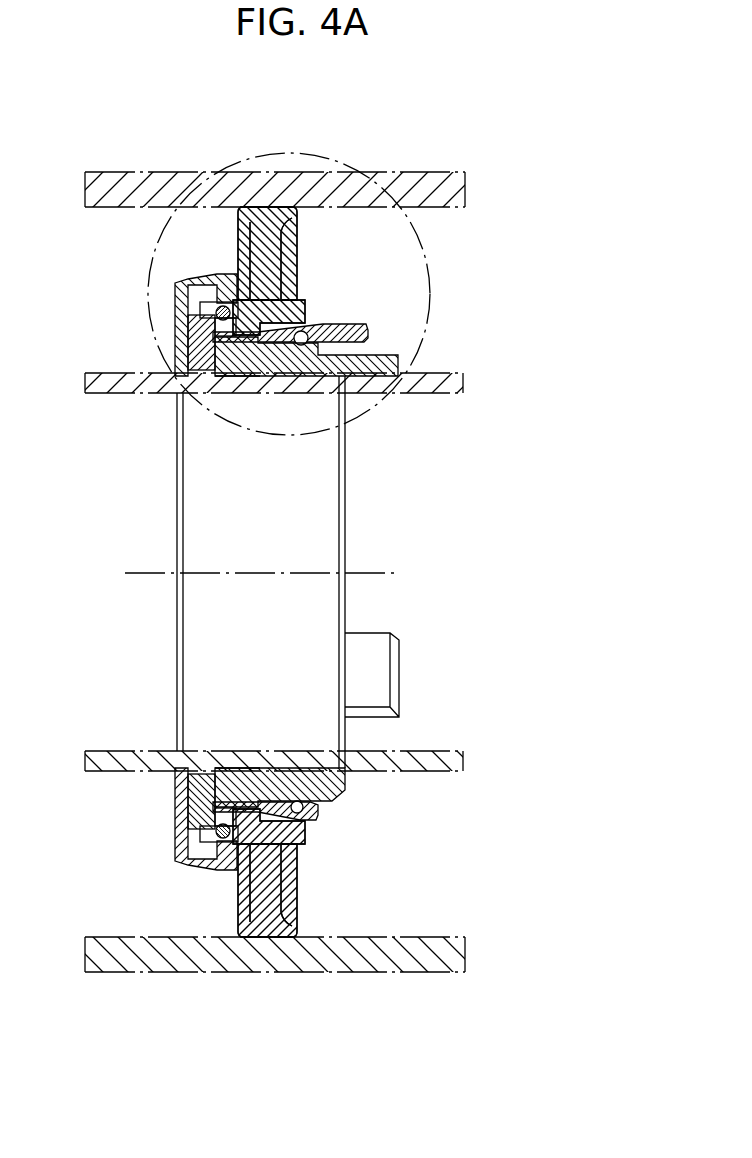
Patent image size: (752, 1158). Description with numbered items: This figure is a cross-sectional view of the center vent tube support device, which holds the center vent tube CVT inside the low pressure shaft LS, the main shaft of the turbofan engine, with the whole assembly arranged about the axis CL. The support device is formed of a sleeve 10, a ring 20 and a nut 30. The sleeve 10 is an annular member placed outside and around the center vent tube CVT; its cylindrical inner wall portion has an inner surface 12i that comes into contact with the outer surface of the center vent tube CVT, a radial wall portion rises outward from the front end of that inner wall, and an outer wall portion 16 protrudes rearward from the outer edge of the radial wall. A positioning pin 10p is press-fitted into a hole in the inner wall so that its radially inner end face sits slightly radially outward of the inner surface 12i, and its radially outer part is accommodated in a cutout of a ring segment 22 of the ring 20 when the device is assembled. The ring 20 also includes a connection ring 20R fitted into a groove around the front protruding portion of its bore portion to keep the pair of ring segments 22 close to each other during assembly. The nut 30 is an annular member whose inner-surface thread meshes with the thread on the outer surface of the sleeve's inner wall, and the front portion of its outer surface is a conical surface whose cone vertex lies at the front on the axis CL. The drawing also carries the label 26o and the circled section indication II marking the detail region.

The sleeve 10 is at (380, 353).
The positioning pin 10p is at (198, 339).
The inner surface 12i is at (228, 394).
The outer wall portion 16 is at (227, 277).
The ring 20 is at (269, 572).
The connection ring 20R is at (190, 305).
The ring segment 22 is at (282, 247).
The outer end face 26o is at (260, 206).
The nut 30 is at (320, 323).
The low pressure shaft LS is at (287, 572).
The center vent tube CVT is at (297, 543).
The axis CL is at (281, 574).
The section indicator II is at (375, 423).